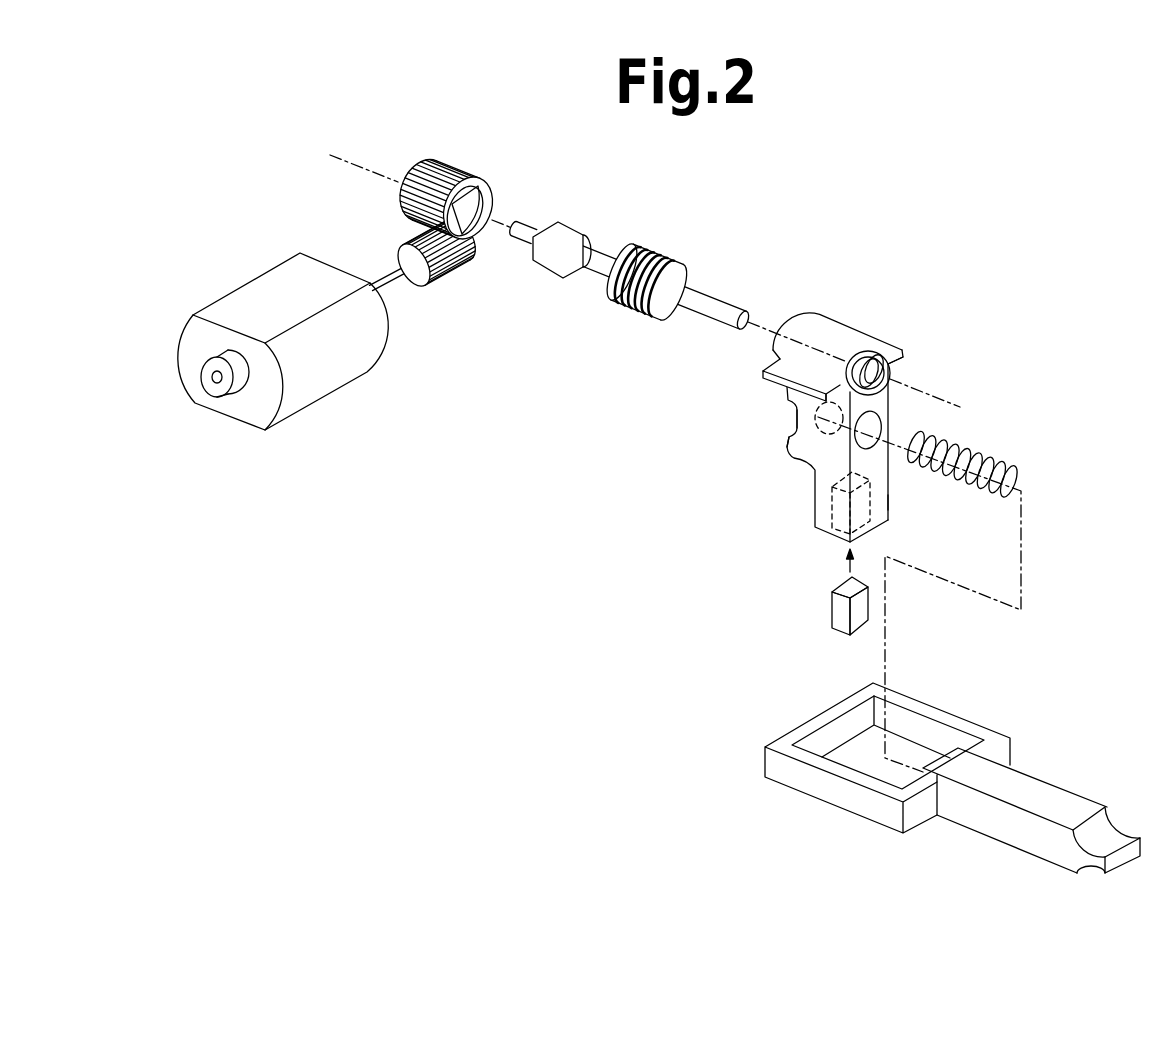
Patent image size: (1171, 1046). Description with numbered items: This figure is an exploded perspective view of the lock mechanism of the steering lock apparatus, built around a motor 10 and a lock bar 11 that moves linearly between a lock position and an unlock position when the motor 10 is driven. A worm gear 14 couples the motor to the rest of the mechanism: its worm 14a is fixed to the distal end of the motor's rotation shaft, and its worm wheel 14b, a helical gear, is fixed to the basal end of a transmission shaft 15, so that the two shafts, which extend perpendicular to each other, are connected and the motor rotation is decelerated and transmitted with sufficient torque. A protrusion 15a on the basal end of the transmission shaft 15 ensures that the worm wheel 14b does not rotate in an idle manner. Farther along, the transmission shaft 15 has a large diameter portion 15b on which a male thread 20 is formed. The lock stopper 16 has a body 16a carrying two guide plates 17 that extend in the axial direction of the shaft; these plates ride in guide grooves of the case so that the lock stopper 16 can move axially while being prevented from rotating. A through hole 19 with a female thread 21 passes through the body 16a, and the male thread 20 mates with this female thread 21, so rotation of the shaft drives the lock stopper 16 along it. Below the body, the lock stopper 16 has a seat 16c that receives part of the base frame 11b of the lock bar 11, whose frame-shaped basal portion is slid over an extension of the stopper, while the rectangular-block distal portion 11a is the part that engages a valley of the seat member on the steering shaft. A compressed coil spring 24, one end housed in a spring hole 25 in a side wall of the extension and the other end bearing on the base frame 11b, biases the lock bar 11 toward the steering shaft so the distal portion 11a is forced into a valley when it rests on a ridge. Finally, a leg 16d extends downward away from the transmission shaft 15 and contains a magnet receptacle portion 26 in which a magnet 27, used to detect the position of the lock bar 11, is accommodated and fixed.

The motor 10 is at (237, 421).
The lock bar 11 is at (952, 791).
The distal portion 11a is at (1002, 847).
The base frame 11b is at (824, 803).
The worm gear 14 is at (387, 226).
The worm 14a is at (399, 257).
The worm wheel 14b is at (397, 208).
The transmission shaft 15 is at (630, 267).
The protrusion 15a is at (567, 227).
The large diameter portion 15b is at (688, 283).
The lock stopper 16 is at (841, 419).
The body 16a is at (857, 333).
The seat 16c is at (795, 411).
The leg 16d is at (788, 452).
The guide plates 17 is at (763, 371).
The through hole 19 is at (855, 352).
The male thread 20 is at (639, 308).
The female thread 21 is at (887, 376).
The coil spring 24 is at (992, 460).
The spring hole 25 is at (877, 422).
The magnet receptacle portion 26 is at (836, 543).
The magnet 27 is at (832, 609).